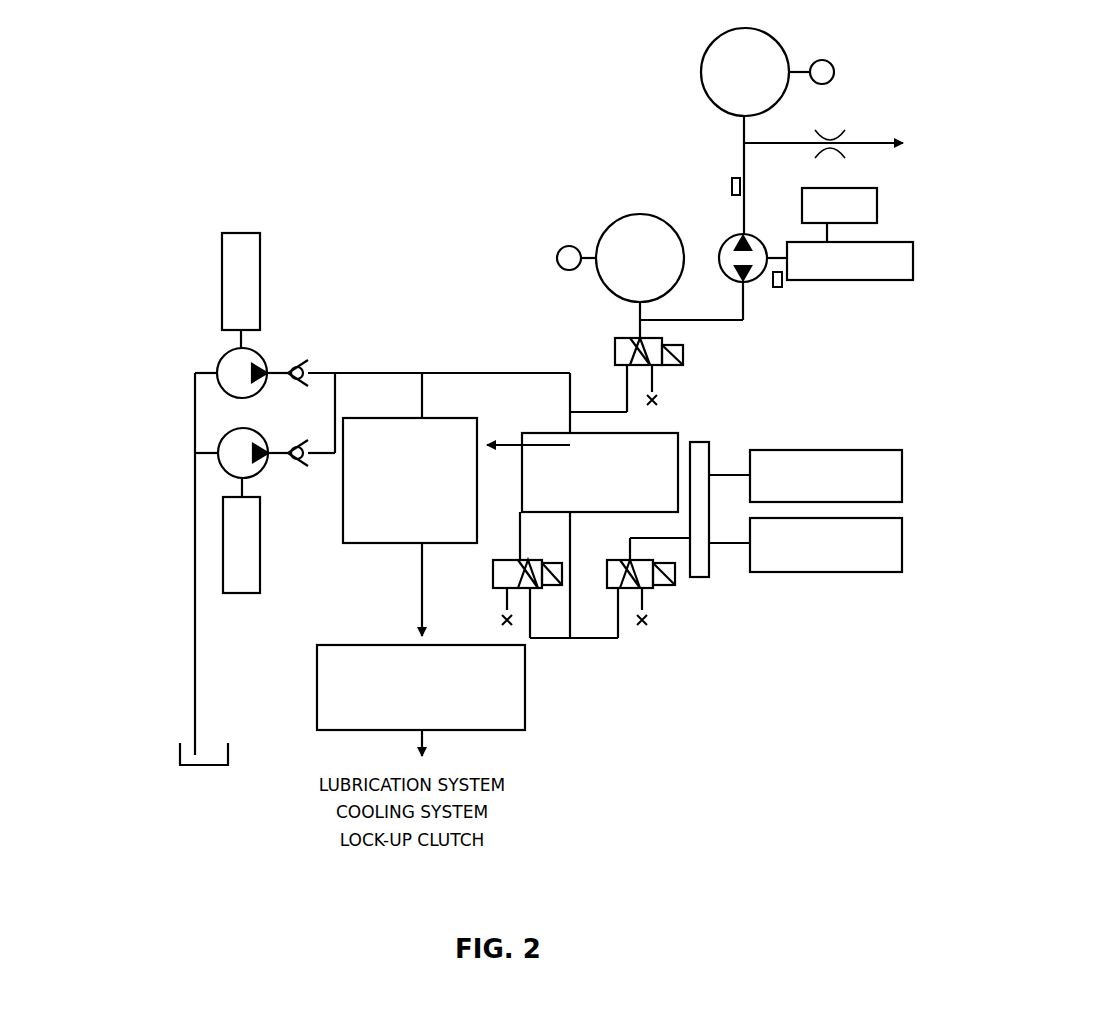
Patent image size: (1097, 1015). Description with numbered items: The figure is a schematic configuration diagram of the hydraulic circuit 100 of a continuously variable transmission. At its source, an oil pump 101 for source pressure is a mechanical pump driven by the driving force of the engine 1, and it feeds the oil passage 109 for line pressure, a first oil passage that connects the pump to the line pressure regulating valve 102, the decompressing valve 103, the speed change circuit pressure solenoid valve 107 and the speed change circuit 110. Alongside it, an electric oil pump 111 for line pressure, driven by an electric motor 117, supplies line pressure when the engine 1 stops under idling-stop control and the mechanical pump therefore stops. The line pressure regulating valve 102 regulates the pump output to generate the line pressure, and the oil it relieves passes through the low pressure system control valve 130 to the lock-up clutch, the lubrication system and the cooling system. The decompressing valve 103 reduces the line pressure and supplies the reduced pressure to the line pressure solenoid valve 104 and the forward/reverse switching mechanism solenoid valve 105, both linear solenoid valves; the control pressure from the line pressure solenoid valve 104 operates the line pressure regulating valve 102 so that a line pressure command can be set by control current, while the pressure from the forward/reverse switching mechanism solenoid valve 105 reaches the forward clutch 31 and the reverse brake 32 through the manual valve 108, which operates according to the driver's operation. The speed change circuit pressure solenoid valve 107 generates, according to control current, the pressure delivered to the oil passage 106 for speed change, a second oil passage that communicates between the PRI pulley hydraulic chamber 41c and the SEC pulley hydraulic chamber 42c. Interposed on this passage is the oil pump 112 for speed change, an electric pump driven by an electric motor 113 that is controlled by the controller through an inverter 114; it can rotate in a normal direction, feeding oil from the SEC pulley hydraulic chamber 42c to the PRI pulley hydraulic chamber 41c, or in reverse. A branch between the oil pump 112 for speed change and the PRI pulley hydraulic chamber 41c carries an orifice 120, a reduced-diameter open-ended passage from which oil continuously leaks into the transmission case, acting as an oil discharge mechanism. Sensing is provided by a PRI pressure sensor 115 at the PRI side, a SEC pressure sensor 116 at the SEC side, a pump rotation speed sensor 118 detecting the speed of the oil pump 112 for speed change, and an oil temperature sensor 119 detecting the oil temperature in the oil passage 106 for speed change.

The engine 1 is at (262, 272).
The hydraulic circuit 100 is at (138, 600).
The oil pump for source pressure 101 is at (224, 358).
The line pressure regulating valve 102 is at (477, 419).
The decompressing valve 103 is at (680, 435).
The line pressure solenoid valve 104 is at (525, 558).
The forward/reverse switching mechanism solenoid valve 105 is at (617, 558).
The oil passage for speed change 106 is at (713, 321).
The speed change circuit pressure solenoid valve 107 is at (617, 338).
The manual valve 108 is at (697, 578).
The oil passage for line pressure 109 is at (492, 372).
The speed change circuit 110 is at (580, 125).
The electric oil pump for line pressure 111 is at (265, 470).
The oil pump for speed change 112 is at (726, 242).
The electric motor 113 is at (830, 281).
The inverter 114 is at (877, 200).
The PRI pressure sensor 115 is at (830, 62).
The SEC pressure sensor 116 is at (559, 249).
The electric motor 117 is at (262, 557).
The pump rotation speed sensor 118 is at (779, 288).
The oil temperature sensor 119 is at (733, 178).
The orifice 120 is at (832, 130).
The low pressure system control valve 130 is at (317, 668).
The forward clutch 31 is at (823, 450).
The reverse brake 32 is at (826, 572).
The PRI pulley hydraulic chamber 41c is at (713, 44).
The SEC pulley hydraulic chamber 42c is at (612, 228).